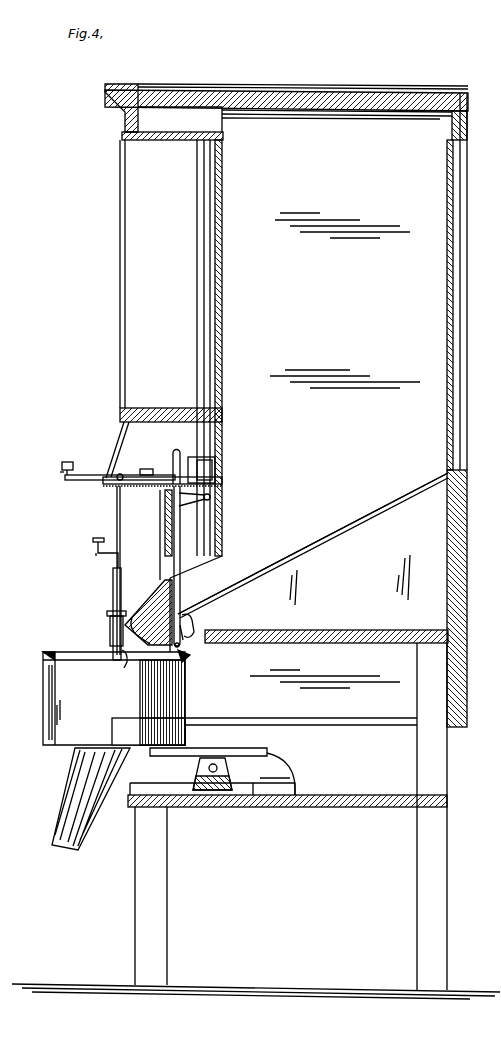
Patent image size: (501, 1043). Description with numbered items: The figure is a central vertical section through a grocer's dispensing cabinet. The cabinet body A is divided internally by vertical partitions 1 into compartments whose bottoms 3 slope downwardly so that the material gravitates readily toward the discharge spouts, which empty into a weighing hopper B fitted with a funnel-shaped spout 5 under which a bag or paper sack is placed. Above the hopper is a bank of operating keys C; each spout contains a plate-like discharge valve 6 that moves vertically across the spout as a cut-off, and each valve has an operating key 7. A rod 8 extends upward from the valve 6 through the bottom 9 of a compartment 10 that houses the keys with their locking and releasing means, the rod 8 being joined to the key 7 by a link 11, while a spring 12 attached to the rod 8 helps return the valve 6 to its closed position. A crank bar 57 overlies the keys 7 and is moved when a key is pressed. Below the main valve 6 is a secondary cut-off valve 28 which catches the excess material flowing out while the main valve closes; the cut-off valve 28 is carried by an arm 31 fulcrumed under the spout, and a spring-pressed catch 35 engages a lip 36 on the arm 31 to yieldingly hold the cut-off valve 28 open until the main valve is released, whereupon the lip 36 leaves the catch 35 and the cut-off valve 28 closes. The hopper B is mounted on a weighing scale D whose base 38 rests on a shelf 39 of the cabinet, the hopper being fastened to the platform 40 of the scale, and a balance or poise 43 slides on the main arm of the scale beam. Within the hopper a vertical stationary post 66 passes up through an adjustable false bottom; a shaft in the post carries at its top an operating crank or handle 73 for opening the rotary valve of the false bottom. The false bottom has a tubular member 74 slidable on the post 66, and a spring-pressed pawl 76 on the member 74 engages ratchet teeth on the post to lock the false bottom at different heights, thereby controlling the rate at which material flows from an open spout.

The vertical partitions 1 is at (286, 405).
The compartment bottoms 3 is at (324, 540).
The funnel-shaped spout 5 is at (70, 818).
The discharge valve 6 is at (181, 581).
The operating key 7 is at (82, 481).
The rod 8 is at (180, 517).
The compartment bottom 9 is at (134, 488).
The compartment 10 is at (164, 443).
The link 11 is at (178, 462).
The spring 12 is at (214, 490).
The secondary cut-off valve 28 is at (150, 640).
The arm 31 is at (192, 667).
The spring-pressed catch 35 is at (208, 634).
The lip 36 is at (187, 638).
The scale base 38 is at (286, 777).
The shelf 39 is at (305, 807).
The scale platform 40 is at (226, 750).
The balance or poise 43 is at (462, 763).
The crank bar 57 is at (142, 473).
The stationary post 66 is at (113, 592).
The operating crank or handle 73 is at (99, 553).
The tubular member 74 is at (113, 633).
The spring-pressed pawl 76 is at (126, 660).
The cabinet body A is at (336, 435).
The weighing hopper B is at (114, 698).
The bank of operating keys C is at (75, 459).
The weighing scale D is at (222, 768).